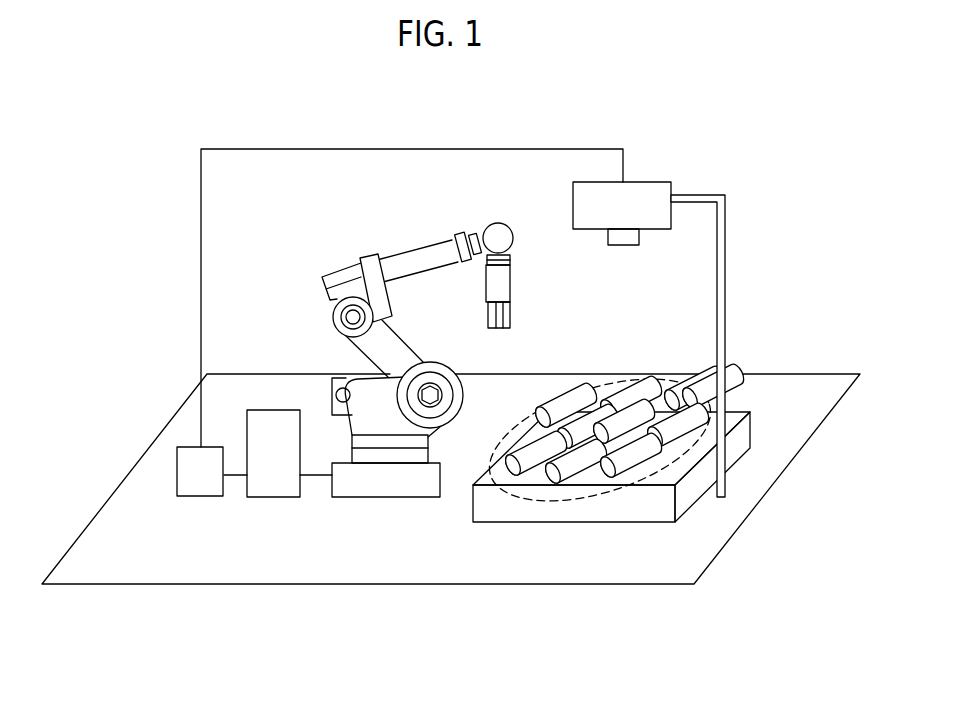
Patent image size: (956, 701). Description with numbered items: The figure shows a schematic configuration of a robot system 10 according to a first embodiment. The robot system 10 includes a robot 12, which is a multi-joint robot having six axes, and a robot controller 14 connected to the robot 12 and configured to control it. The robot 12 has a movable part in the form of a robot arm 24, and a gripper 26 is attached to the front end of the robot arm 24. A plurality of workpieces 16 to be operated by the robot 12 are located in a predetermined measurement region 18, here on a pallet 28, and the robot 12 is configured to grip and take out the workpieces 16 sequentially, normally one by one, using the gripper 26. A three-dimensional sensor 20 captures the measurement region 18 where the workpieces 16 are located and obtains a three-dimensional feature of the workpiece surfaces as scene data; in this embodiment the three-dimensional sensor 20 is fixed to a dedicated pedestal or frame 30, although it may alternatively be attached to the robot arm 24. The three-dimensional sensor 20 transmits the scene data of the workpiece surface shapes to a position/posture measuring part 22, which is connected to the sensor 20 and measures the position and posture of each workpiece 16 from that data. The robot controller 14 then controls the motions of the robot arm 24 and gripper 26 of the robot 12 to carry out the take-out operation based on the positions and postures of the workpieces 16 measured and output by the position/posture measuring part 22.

The robot system 10 is at (187, 117).
The robot 12 is at (408, 348).
The robot controller 14 is at (273, 431).
The workpiece 16 is at (627, 468).
The measurement region 18 is at (609, 467).
The three-dimensional sensor 20 is at (640, 180).
The position/posture measuring part 22 is at (195, 466).
The robot arm 24 is at (395, 253).
The gripper 26 is at (502, 287).
The pallet 28 is at (498, 523).
The frame 30 is at (712, 195).